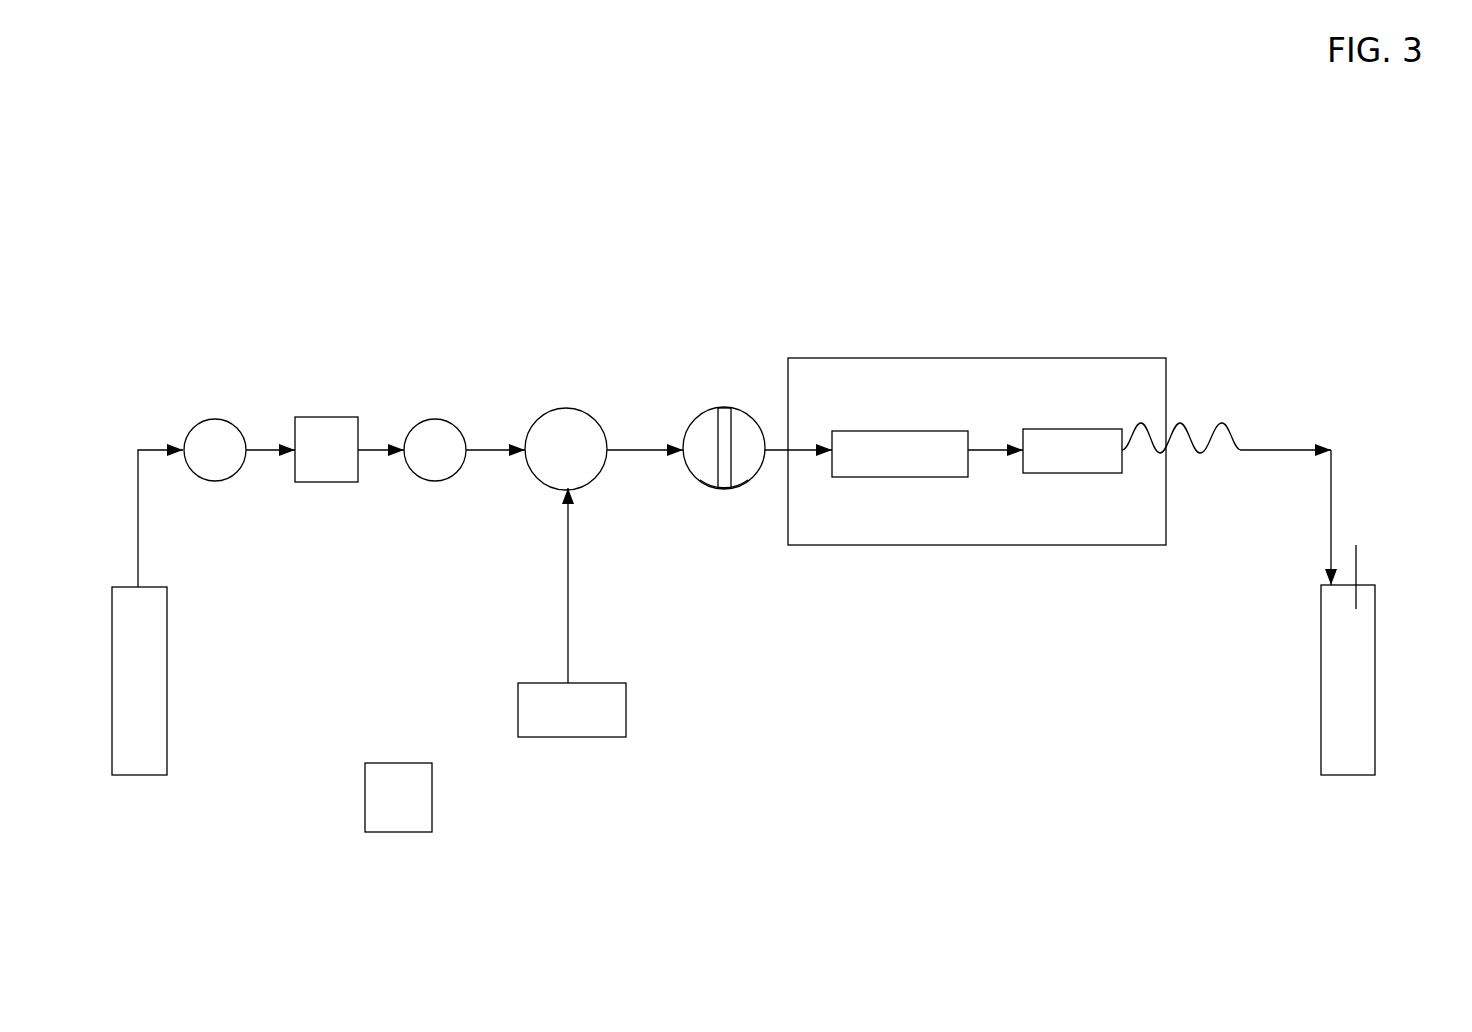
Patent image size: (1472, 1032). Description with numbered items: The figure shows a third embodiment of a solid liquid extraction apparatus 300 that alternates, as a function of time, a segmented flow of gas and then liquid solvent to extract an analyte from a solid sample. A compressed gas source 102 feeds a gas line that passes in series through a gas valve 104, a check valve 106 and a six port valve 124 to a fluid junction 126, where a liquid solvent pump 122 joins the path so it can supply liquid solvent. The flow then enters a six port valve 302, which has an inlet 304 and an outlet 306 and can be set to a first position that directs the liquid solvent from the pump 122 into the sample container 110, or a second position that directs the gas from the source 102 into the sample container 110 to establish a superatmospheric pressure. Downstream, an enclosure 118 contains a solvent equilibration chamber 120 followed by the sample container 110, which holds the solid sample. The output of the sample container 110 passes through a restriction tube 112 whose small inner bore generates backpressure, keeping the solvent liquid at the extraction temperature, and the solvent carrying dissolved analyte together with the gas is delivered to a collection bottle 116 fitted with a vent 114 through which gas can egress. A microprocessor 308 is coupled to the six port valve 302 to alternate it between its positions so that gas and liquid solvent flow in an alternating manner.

The apparatus 300 is at (977, 177).
The compressed gas source 102 is at (167, 757).
The gas valve 104 is at (215, 419).
The check valve 106 is at (320, 417).
The six port valve 124 is at (433, 420).
The fluid junction 126 is at (552, 409).
The six port valve 302 is at (700, 410).
The inlet 304 is at (723, 408).
The outlet 306 is at (724, 489).
The housing 118 is at (888, 547).
The solvent equilibration chamber 120 is at (868, 431).
The sample container 110 is at (1037, 429).
The restriction tube 112 is at (1193, 434).
The vent 114 is at (1357, 558).
The collection bottle 116 is at (1321, 733).
The liquid solvent pump 122 is at (626, 718).
The microprocessor 308 is at (432, 815).